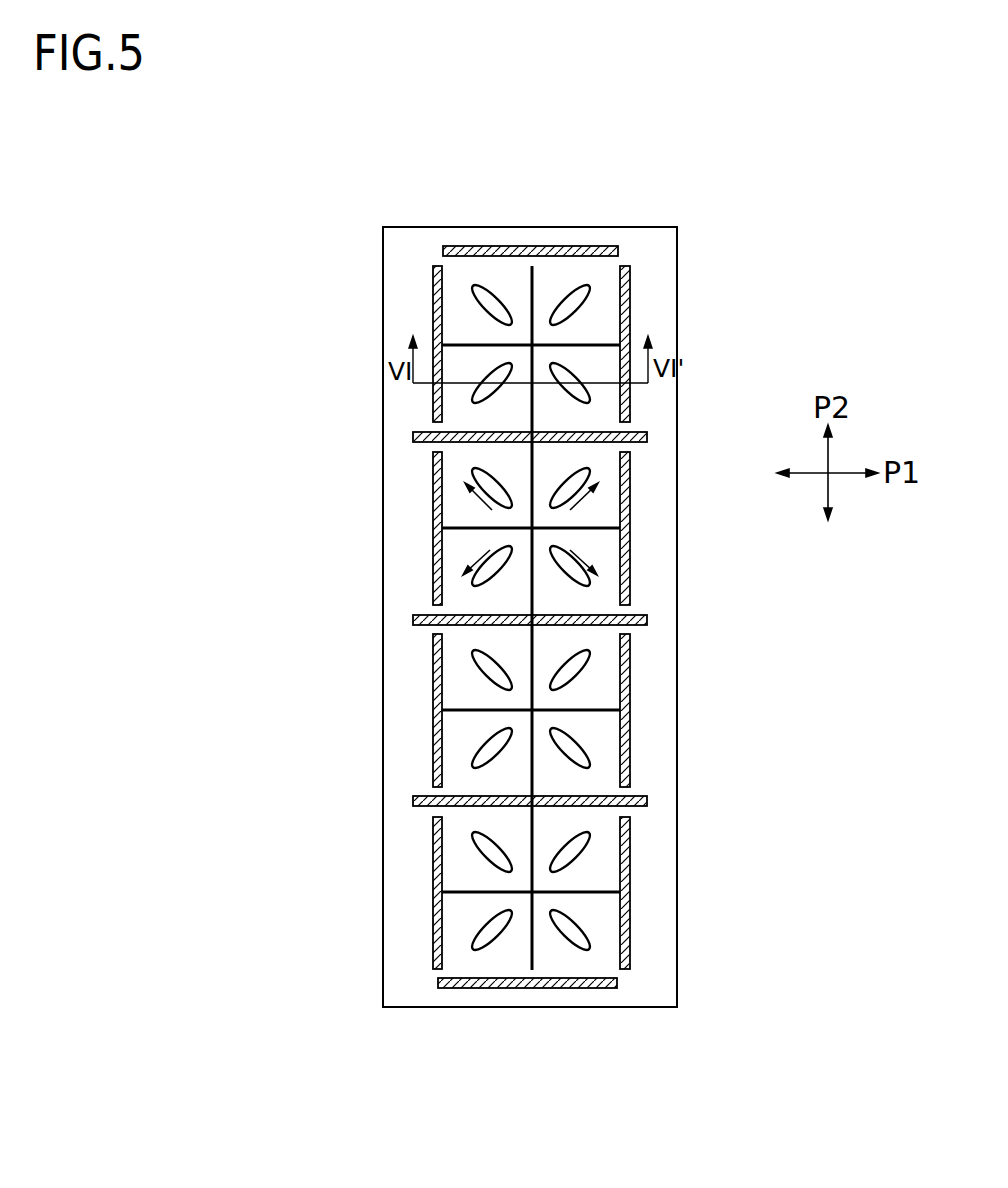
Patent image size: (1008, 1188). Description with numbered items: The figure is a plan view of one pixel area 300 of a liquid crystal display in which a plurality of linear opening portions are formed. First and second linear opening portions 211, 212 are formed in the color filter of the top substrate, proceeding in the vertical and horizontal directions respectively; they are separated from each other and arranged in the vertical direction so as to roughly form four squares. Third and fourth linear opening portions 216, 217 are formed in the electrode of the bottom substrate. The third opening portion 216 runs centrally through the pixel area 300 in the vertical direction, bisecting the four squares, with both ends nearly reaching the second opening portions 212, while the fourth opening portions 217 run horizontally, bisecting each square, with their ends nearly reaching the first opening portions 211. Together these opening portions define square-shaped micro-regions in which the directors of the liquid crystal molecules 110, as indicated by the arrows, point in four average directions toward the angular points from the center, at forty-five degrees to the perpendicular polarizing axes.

The liquid crystal molecules 110 is at (590, 573).
The first linear opening portions 211 is at (627, 330).
The second linear opening portions 212 is at (417, 435).
The third linear opening portion 216 is at (533, 278).
The fourth linear opening portions 217 is at (450, 343).
The pixel area 300 is at (380, 843).